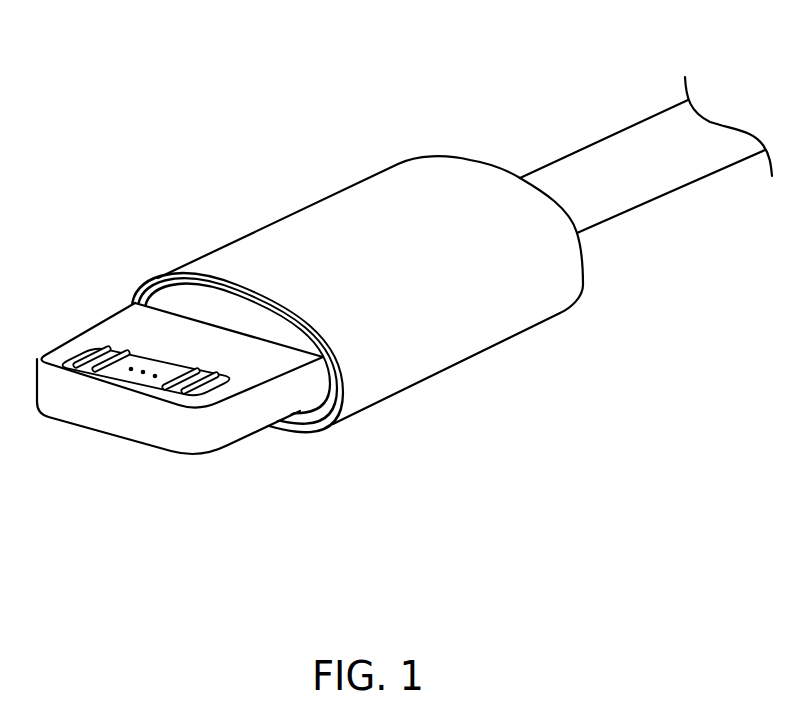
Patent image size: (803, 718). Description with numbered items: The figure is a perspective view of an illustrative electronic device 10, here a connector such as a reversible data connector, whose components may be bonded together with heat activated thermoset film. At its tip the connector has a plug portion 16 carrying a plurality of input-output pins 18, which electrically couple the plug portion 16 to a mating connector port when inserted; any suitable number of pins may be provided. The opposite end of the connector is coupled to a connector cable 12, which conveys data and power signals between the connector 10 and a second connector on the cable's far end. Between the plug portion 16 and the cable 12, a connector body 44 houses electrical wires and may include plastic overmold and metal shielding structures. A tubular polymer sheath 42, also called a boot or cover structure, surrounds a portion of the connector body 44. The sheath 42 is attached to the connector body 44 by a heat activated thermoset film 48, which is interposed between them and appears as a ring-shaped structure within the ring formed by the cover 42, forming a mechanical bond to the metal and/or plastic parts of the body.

The electronic device 10 is at (398, 276).
The connector cable 12 is at (670, 173).
The plug portion 16 is at (128, 332).
The input-output pins 18 is at (90, 352).
The polymer sheath 42 is at (447, 347).
The connector body 44 is at (265, 317).
The heat activated thermoset film 48 is at (160, 290).